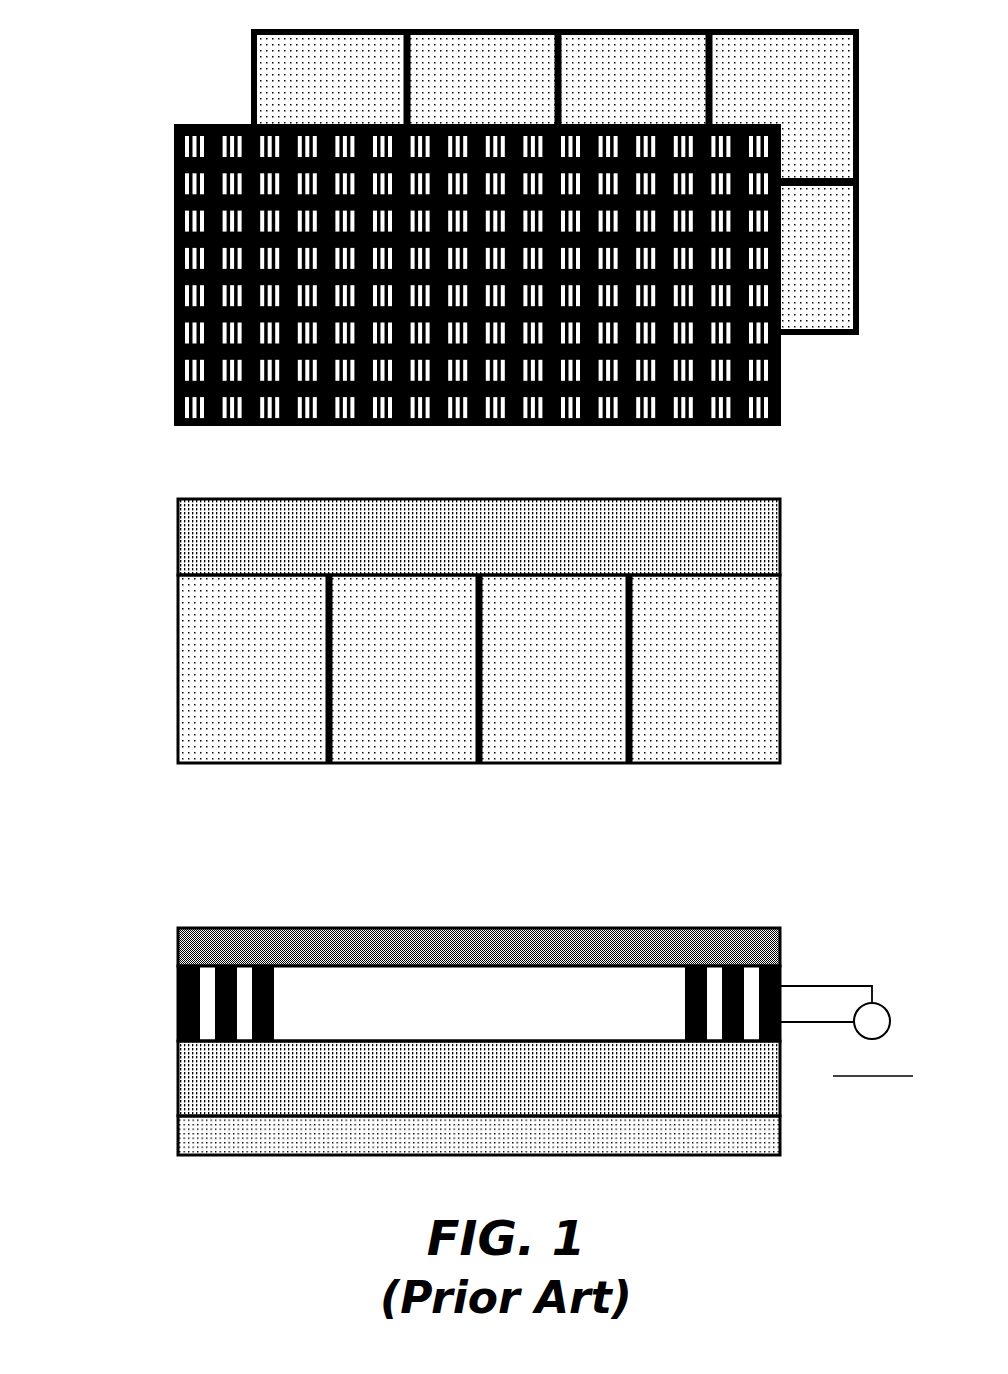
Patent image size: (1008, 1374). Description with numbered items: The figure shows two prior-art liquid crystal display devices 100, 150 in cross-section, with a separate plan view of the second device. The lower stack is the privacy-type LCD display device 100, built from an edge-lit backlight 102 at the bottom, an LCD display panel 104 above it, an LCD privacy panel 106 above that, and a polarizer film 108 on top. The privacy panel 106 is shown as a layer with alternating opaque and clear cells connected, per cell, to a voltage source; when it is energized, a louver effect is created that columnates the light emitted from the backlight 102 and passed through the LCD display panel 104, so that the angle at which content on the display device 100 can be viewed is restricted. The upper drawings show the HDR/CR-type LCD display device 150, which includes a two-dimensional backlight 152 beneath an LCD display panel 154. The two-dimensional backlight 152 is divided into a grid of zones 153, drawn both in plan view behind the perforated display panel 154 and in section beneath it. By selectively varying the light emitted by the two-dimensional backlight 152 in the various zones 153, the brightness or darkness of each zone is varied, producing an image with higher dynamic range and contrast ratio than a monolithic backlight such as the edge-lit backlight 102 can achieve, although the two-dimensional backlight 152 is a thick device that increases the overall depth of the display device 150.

The LCD display device 100 is at (471, 1068).
The edge-lit backlight 102 is at (171, 1119).
The LCD display panel 104 is at (171, 1059).
The LCD privacy panel 106 is at (171, 986).
The polarizer film 108 is at (171, 932).
The LCD display device 150 is at (441, 423).
The two-dimensional (2D) backlight 152 is at (245, 34).
The zones 153 is at (305, 91).
The LCD display panel 154 is at (167, 144).